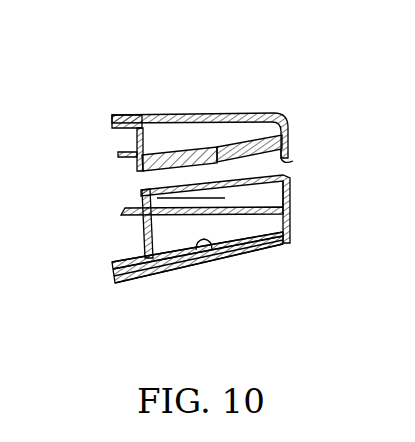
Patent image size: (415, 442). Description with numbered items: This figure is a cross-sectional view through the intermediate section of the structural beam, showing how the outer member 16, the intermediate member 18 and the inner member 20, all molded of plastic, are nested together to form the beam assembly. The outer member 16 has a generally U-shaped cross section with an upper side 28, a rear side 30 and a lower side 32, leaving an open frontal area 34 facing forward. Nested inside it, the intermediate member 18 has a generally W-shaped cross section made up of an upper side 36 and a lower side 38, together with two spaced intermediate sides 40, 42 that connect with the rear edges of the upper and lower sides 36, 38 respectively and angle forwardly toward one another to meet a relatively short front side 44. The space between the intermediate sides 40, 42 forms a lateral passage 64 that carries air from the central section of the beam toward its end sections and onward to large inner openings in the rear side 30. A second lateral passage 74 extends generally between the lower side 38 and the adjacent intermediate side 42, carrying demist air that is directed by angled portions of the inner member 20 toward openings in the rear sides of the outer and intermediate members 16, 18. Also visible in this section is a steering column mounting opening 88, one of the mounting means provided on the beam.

The outer member 16 is at (108, 292).
The intermediate member 18 is at (108, 279).
The inner member 20 is at (104, 265).
The upper side 28 is at (175, 113).
The rear side 30 is at (288, 200).
The lower side 32 is at (250, 254).
The open frontal area 34 is at (112, 117).
The upper side 36 is at (205, 126).
The lower side 38 is at (200, 247).
The intermediate side 40 is at (240, 143).
The intermediate side 42 is at (255, 214).
The front side 44 is at (205, 200).
The lateral passage 64 is at (278, 190).
The lateral passage 74 is at (160, 232).
The steering column mounting opening 88 is at (287, 162).